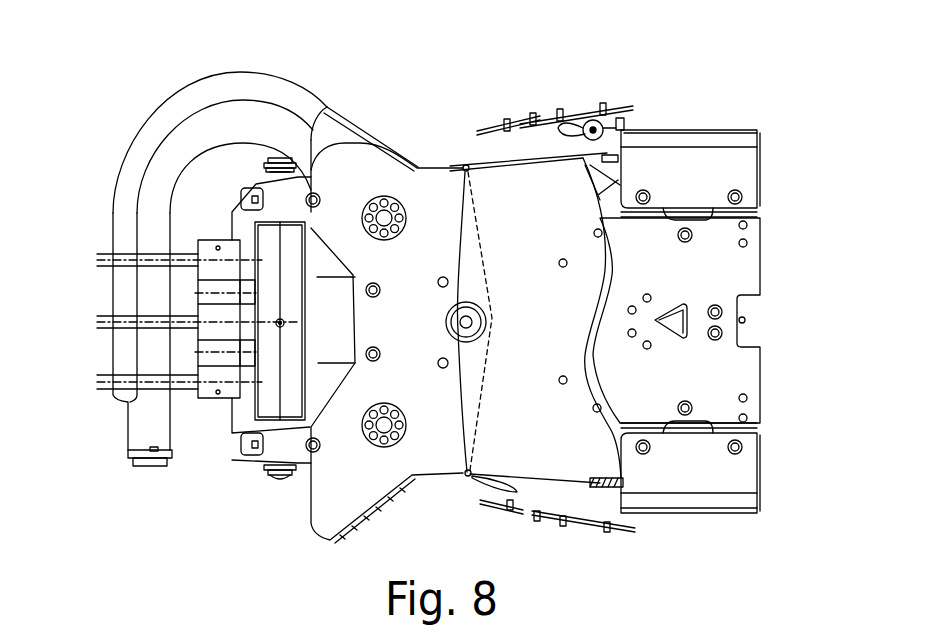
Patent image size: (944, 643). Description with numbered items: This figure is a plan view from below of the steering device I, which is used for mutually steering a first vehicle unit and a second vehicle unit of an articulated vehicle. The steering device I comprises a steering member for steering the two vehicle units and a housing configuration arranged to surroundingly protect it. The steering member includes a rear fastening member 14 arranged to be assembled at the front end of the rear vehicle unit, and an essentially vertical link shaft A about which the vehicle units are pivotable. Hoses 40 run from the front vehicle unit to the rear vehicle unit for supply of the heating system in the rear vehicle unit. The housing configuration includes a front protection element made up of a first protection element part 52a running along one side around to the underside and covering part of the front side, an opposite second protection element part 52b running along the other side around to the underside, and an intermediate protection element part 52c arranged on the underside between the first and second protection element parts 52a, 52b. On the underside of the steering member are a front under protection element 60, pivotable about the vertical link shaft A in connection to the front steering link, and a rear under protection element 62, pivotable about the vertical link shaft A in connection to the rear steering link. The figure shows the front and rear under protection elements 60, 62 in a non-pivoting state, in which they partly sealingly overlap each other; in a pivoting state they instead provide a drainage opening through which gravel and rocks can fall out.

The hoses 40 is at (165, 97).
The rear fastening member 14 is at (210, 396).
The rear under protection element 62 is at (352, 473).
The front under protection element 60 is at (562, 453).
The vertical link shaft A is at (466, 328).
The steering device I is at (583, 73).
The first protection element part 52a is at (722, 156).
The second protection element part 52b is at (690, 487).
The intermediate protection element part 52c is at (740, 282).